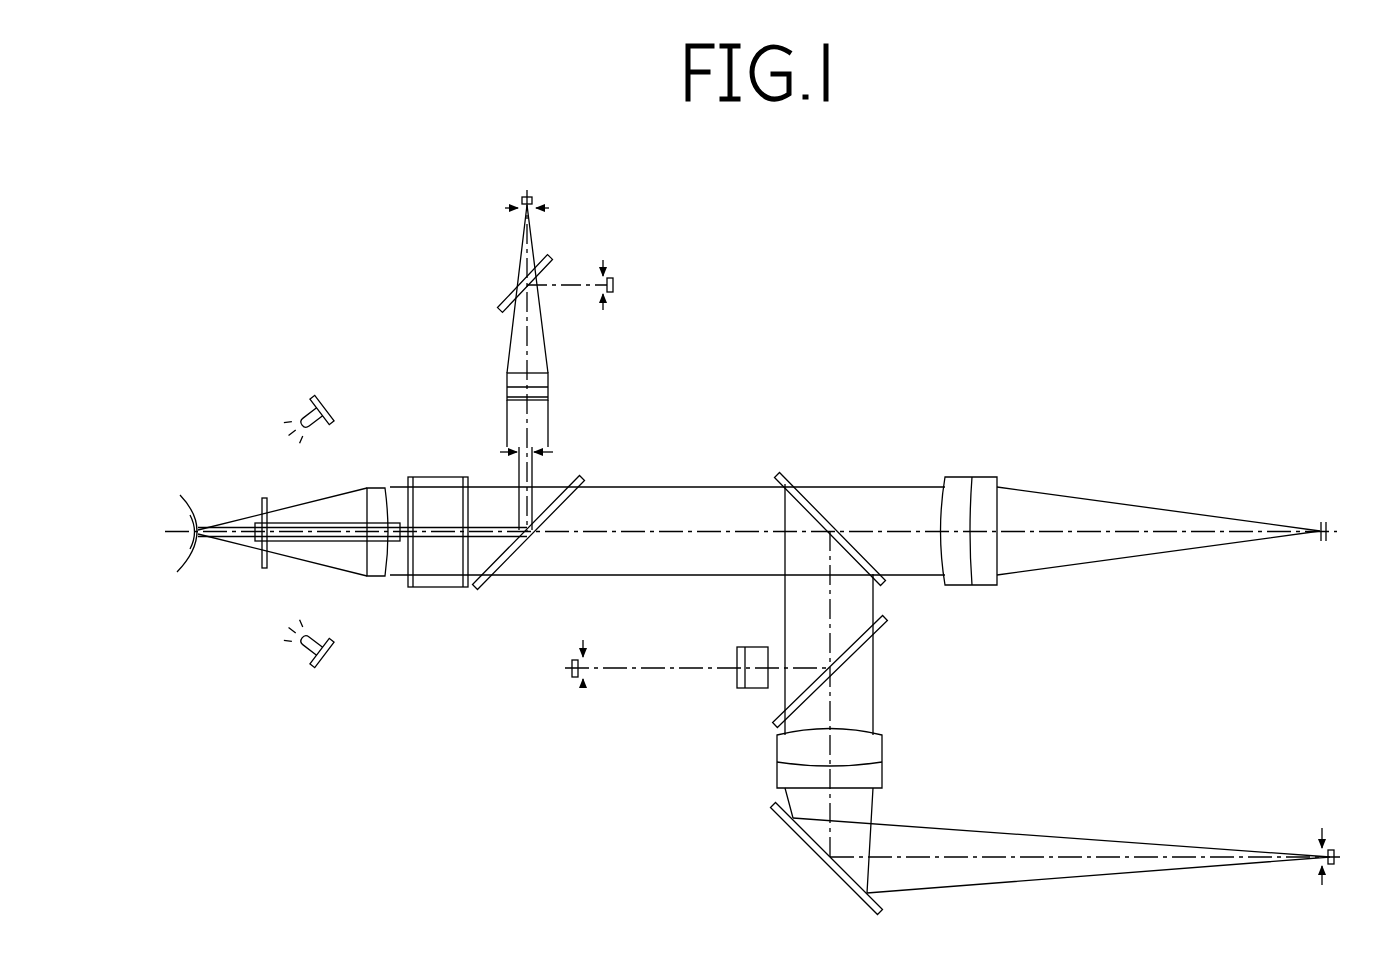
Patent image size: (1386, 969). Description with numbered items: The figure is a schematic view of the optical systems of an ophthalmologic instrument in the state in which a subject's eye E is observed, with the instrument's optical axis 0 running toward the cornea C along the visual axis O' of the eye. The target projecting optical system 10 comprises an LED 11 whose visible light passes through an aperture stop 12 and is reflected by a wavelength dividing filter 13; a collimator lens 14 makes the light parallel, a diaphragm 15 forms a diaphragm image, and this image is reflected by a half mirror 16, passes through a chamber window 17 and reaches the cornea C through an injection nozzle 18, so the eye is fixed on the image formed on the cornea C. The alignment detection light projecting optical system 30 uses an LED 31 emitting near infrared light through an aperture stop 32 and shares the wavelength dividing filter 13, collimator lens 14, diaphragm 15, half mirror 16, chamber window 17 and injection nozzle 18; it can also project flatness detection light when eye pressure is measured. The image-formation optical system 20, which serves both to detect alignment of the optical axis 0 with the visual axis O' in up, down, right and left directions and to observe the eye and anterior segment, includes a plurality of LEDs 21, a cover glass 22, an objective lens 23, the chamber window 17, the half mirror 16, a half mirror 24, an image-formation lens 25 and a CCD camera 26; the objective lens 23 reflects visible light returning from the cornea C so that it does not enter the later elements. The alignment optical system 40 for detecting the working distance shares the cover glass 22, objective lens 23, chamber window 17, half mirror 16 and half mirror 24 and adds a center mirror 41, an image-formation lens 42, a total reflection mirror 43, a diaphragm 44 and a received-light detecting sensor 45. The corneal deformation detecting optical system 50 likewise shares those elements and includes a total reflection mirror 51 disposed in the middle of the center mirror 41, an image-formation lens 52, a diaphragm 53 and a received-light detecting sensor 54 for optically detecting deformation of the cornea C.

The subject's eye E is at (193, 493).
The visual axis O' is at (180, 578).
The cornea C is at (193, 553).
The target projecting optical system 10 is at (642, 268).
The LED 11 is at (613, 292).
The aperture stop 12 is at (603, 262).
The wavelength dividing filter 13 is at (500, 300).
The collimator lens 14 is at (540, 377).
The diaphragm 15 is at (553, 452).
The half mirror 16 is at (482, 590).
The chamber window 17 is at (436, 590).
The injection nozzle 18 is at (338, 514).
The image-formation optical system 20 is at (1022, 450).
The LEDs 21 is at (320, 397).
The cover glass 22 is at (263, 570).
The objective lens 23 is at (375, 568).
The half mirror 24 is at (778, 472).
The image-formation lens 25 is at (958, 486).
The CCD camera 26 is at (1318, 525).
The alignment detection light projecting optical system 30 is at (478, 252).
The LED 31 is at (545, 203).
The aperture stop 32 is at (505, 208).
The alignment optical system 40 is at (1062, 798).
The center mirror 41 is at (888, 620).
The image-formation lens 42 is at (885, 748).
The total reflection mirror 43 is at (788, 828).
The diaphragm 44 is at (1320, 830).
The received-light detecting sensor 45 is at (1336, 847).
The corneal deformation detecting optical system 50 is at (680, 690).
The total reflection mirror 51 is at (820, 674).
The image-formation lens 52 is at (752, 650).
The diaphragm 53 is at (583, 688).
The received-light detecting sensor 54 is at (572, 668).
The optical axis 0 is at (640, 533).